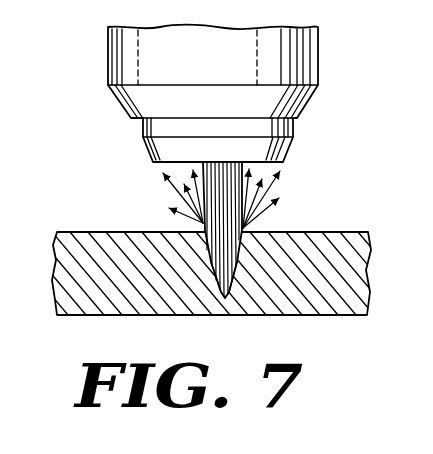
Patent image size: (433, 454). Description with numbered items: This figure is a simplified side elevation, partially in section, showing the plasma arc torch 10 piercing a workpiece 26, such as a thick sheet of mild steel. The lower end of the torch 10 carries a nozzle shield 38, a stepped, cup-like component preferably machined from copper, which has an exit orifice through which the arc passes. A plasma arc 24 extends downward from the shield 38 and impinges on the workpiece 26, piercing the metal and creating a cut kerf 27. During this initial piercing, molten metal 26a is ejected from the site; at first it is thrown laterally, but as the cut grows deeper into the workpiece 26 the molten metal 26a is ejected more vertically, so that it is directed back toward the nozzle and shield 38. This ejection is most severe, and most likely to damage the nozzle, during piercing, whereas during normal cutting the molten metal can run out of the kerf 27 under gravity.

The plasma arc torch 10 is at (331, 93).
The plasma arc 24 is at (203, 223).
The workpiece 26 is at (214, 259).
The molten metal 26a is at (274, 196).
The cut kerf 27 is at (214, 276).
The nozzle shield 38 is at (299, 148).